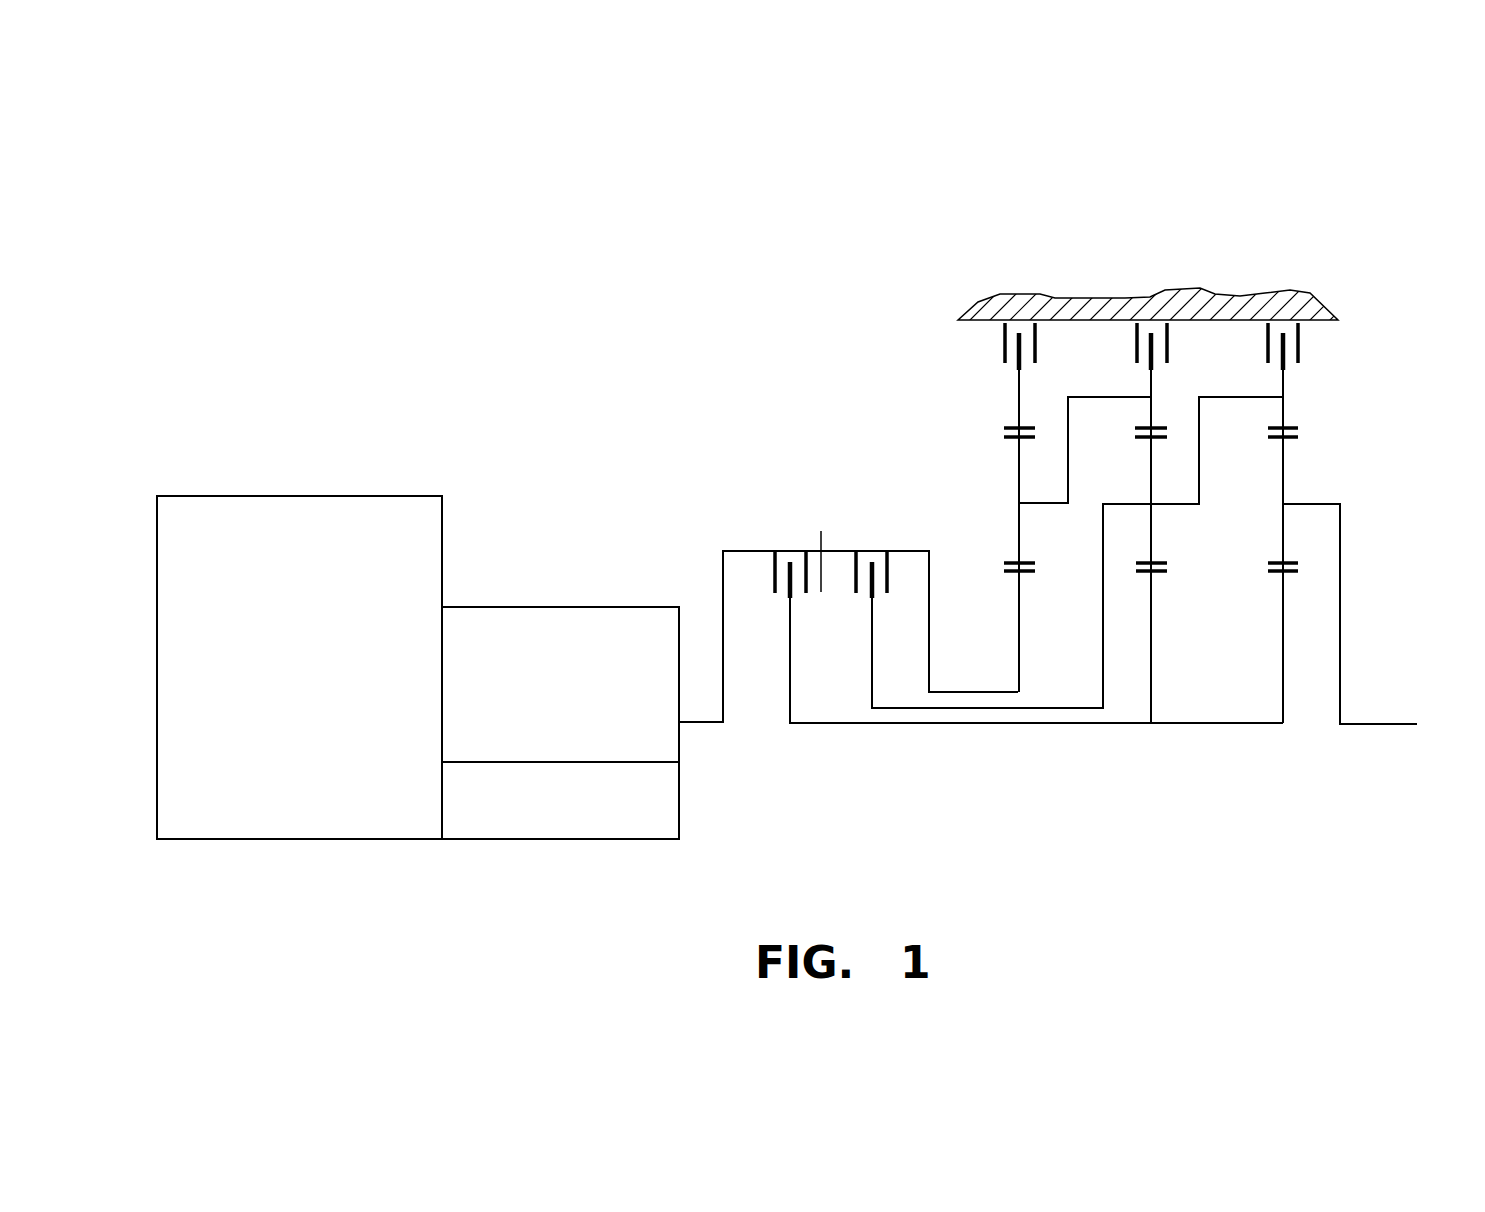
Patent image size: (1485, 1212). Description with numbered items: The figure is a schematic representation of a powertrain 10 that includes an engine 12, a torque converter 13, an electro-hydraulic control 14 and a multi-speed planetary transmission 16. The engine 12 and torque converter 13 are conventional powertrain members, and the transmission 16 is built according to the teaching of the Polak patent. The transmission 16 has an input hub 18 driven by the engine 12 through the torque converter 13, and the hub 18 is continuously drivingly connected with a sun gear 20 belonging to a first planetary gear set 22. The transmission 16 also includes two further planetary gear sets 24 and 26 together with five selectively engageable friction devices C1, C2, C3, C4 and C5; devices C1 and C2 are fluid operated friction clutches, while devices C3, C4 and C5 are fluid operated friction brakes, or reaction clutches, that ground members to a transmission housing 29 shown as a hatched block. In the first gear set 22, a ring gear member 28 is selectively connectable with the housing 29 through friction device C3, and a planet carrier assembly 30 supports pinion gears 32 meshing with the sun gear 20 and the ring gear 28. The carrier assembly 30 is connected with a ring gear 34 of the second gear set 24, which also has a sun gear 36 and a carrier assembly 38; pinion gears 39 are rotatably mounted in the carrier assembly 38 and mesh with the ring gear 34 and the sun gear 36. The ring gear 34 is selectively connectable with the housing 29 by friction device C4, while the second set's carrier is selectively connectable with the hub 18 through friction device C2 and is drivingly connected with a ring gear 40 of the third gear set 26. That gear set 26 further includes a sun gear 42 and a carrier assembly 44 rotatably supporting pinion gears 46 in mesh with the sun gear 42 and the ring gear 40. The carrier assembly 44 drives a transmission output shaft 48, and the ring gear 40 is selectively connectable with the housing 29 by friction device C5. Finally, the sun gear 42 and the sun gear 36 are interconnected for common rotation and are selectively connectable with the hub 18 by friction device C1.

The powertrain 10 is at (673, 463).
The engine 12 is at (342, 510).
The torque converter 13 is at (598, 614).
The electro-hydraulic control 14 is at (660, 827).
The multi-speed planetary transmission 16 is at (883, 448).
The input hub 18 is at (730, 551).
The friction clutch C1 is at (773, 570).
The friction clutch C2 is at (855, 570).
The friction brake C3 is at (1002, 342).
The friction brake C4 is at (1137, 342).
The friction brake C5 is at (1265, 342).
The sun gear 20 is at (1017, 612).
The first planetary gear set 22 is at (1033, 592).
The planetary gear set 24 is at (1159, 587).
The planetary gear set 26 is at (1270, 590).
The ring gear member 28 is at (1017, 403).
The transmission housing 29 is at (1048, 303).
The planet carrier assembly 30 is at (1068, 437).
The pinion gears 32 is at (1017, 483).
The ring gear 34 is at (1153, 378).
The sun gear 36 is at (1150, 587).
The carrier assembly 38 is at (1167, 504).
The pinion gears 39 is at (1151, 513).
The ring gear 40 is at (1285, 412).
The sun gear 42 is at (1283, 672).
The carrier assembly 44 is at (1320, 503).
The pinion gears 46 is at (1285, 477).
The transmission output shaft 48 is at (1383, 724).